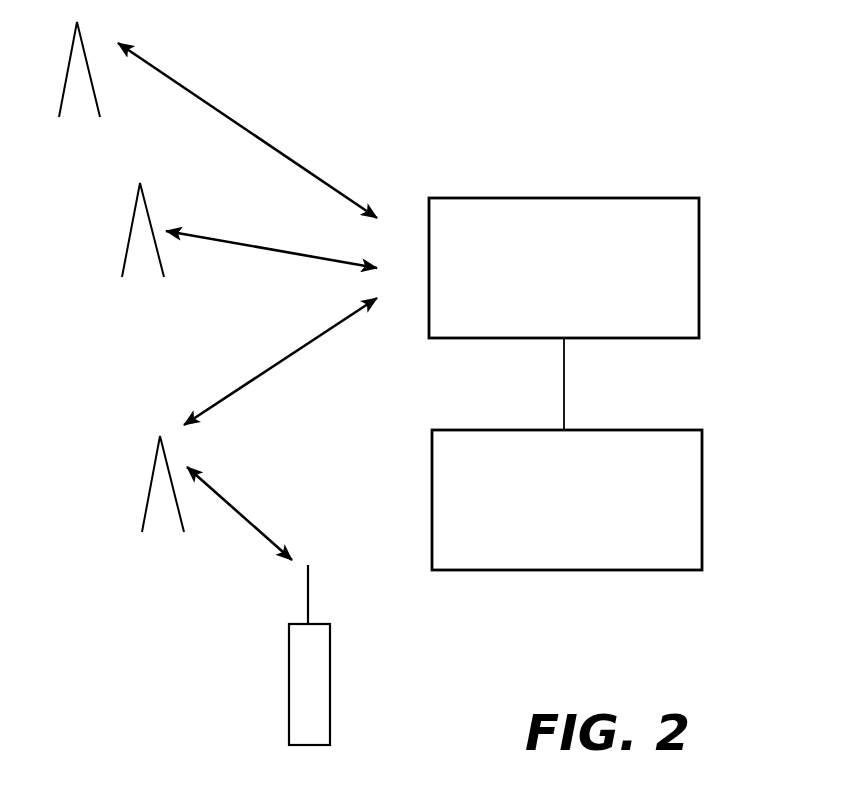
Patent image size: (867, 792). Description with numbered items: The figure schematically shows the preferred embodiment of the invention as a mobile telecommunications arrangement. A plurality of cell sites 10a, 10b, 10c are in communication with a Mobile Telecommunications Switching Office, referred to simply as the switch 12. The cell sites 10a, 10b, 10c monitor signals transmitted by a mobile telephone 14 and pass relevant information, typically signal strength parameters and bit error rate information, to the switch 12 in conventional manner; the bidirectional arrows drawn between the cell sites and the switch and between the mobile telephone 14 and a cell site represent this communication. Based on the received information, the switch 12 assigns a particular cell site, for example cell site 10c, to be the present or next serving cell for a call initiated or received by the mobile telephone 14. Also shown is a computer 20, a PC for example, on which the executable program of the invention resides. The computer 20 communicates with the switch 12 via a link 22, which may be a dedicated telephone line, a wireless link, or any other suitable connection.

The cell site 10a is at (90, 75).
The cell site 10b is at (126, 237).
The cell site 10c is at (146, 490).
The switch 12 is at (700, 265).
The mobile telephone 14 is at (331, 678).
The computer 20 is at (703, 493).
The link 22 is at (564, 378).